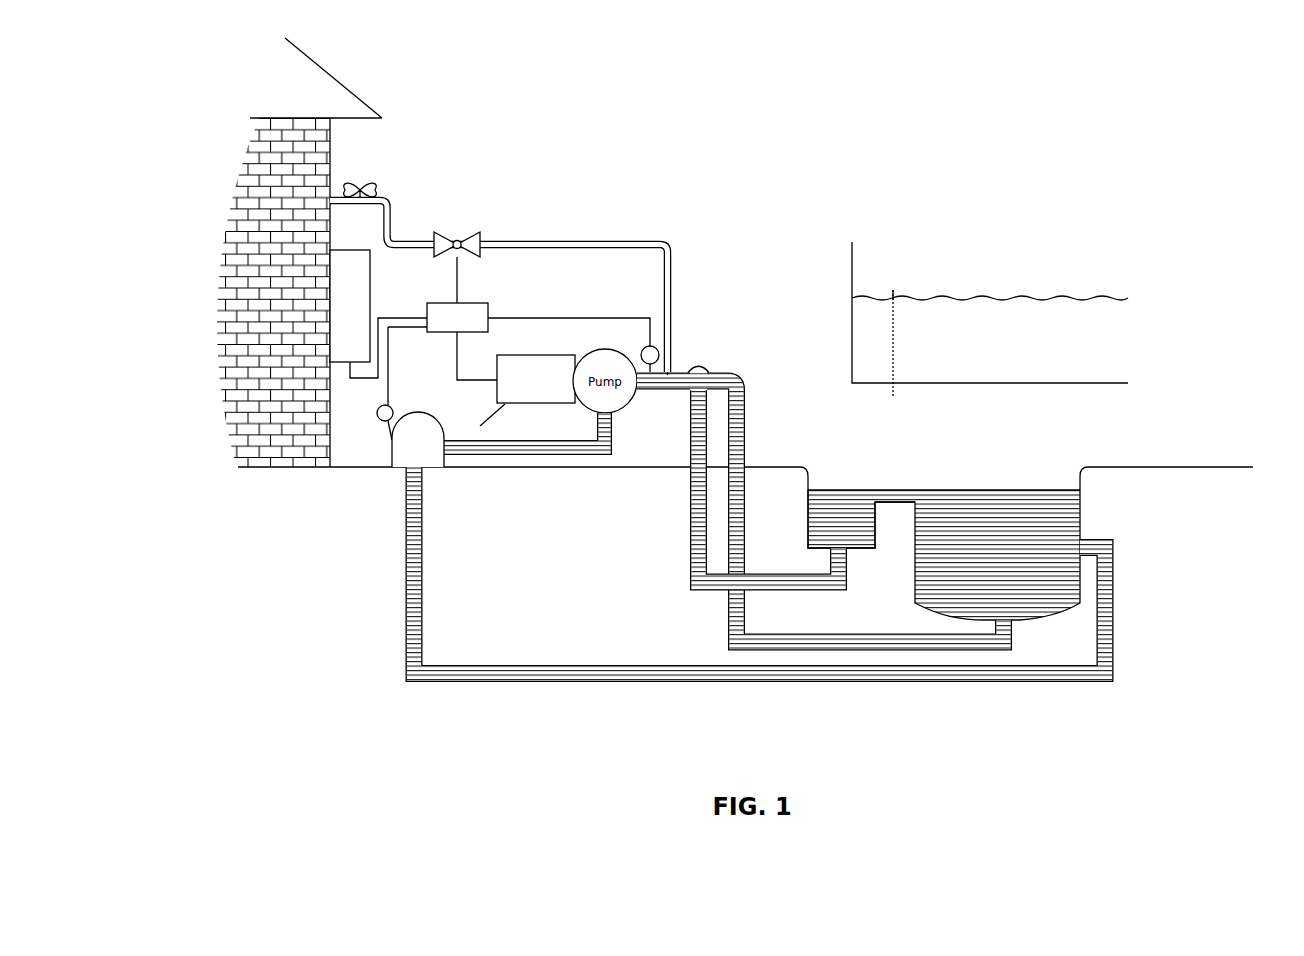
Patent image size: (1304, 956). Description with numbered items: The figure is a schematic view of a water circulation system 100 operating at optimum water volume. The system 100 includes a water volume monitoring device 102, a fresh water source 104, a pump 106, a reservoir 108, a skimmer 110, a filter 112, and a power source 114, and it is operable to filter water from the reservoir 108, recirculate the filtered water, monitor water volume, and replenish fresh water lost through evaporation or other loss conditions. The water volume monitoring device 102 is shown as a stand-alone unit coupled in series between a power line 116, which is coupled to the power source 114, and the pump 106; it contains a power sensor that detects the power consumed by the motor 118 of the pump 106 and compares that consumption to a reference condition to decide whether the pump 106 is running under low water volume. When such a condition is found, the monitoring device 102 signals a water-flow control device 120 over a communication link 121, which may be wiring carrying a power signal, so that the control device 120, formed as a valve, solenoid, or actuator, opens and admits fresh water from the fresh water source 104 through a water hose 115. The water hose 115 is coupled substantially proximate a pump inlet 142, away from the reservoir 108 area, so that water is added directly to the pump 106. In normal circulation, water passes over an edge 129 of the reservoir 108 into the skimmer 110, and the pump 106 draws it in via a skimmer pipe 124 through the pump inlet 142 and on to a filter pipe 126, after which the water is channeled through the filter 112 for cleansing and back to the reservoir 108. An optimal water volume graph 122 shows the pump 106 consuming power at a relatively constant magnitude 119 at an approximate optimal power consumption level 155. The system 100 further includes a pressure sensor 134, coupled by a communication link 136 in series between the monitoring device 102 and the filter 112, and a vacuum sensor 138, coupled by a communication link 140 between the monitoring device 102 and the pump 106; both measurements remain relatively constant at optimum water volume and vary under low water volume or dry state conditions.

The water circulation system 100 is at (740, 773).
The water volume monitoring device 102 is at (488, 318).
The fresh water source 104 is at (364, 186).
The pump 106 is at (562, 352).
The reservoir 108 is at (988, 480).
The skimmer 110 is at (848, 472).
The filter 112 is at (392, 448).
The power source 114 is at (372, 288).
The water hose 115 is at (565, 240).
The power line 116 is at (390, 324).
The motor 118 is at (477, 420).
The relatively constant magnitude 119 is at (1012, 300).
The water-flow control device 120 is at (459, 237).
The communication link 121 is at (459, 294).
The optimal water volume graph 122 is at (980, 304).
The skimmer pipe 124 is at (752, 440).
The filter pipe 126 is at (487, 440).
The edge 129 is at (870, 498).
The pressure sensor 134 is at (378, 419).
The communication link 136 is at (388, 388).
The vacuum sensor 138 is at (644, 350).
The communication link 140 is at (571, 318).
The pump inlet 142 is at (700, 370).
The approximate optimal power consumption level 155 is at (866, 298).